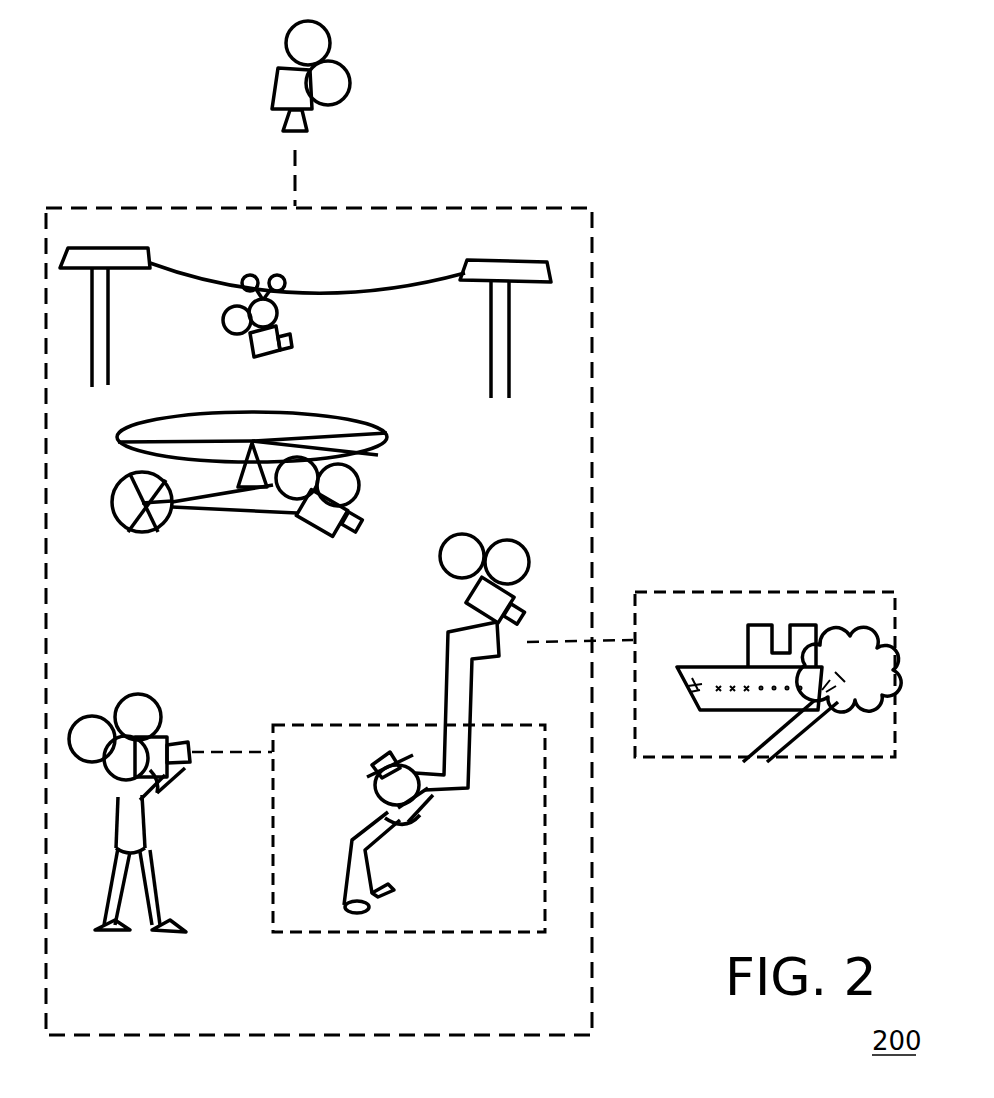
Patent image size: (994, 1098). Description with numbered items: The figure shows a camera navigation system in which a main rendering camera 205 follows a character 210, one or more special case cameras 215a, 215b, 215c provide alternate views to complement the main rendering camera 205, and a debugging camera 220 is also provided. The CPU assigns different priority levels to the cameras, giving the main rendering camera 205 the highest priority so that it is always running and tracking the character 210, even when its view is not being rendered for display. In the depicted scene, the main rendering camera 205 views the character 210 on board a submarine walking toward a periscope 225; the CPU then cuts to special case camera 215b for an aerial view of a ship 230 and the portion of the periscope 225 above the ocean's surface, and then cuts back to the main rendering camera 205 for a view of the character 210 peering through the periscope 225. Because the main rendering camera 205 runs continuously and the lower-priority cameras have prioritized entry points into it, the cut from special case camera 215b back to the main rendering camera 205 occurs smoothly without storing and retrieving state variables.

The main rendering camera 205 is at (140, 692).
The character 210 is at (390, 886).
The special case camera 215a is at (290, 336).
The special case camera 215b is at (363, 513).
The special case camera 215c is at (463, 532).
The debugging camera 220 is at (352, 87).
The periscope 225 is at (448, 641).
The ship 230 is at (773, 590).